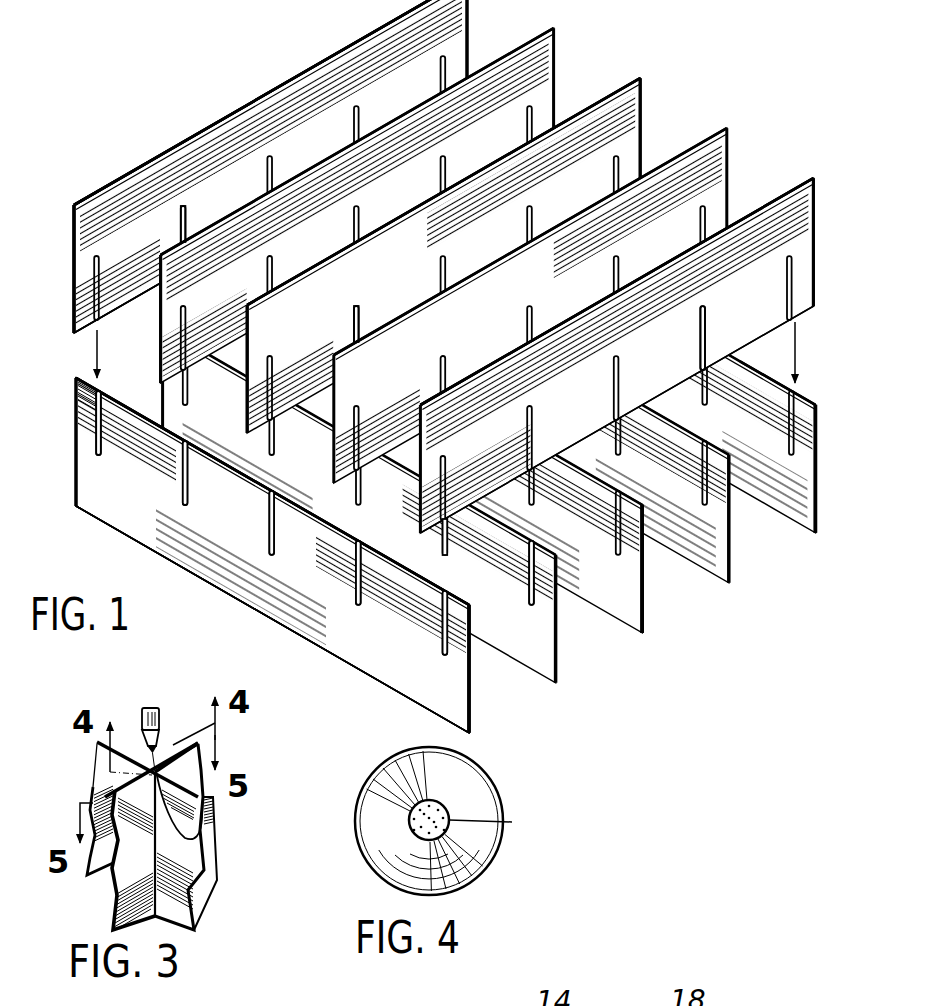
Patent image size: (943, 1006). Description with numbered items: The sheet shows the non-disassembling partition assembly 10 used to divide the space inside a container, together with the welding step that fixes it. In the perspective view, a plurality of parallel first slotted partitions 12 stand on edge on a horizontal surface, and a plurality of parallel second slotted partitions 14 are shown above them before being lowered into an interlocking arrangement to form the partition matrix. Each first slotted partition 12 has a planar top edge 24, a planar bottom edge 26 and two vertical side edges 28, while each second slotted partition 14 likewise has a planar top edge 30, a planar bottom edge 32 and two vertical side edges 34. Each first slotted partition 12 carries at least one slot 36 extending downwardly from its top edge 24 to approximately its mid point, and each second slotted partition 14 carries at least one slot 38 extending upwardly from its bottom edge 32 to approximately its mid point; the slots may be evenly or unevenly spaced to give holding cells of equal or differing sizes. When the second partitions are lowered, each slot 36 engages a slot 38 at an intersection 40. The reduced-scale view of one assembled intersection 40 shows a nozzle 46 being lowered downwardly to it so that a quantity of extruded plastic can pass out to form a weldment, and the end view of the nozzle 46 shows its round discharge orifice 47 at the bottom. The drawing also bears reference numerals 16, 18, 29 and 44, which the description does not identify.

In FIG. 1, the partition assembly 10 is at (727, 44).
In FIG. 1, the first slotted partition 12 is at (220, 613).
In FIG. 3, the first slotted partition 12 is at (88, 878).
In FIG. 1, the second slotted partition 14 is at (222, 96).
In FIG. 3, the second slotted partition 14 is at (217, 880).
In FIG. 1, the panel body 16 is at (318, 228).
In FIG. 1, the partition panel 18 is at (322, 164).
In FIG. 1, the planar top edge 24 is at (78, 376).
In FIG. 3, the planar top edge 24 is at (117, 790).
In FIG. 1, the planar bottom edge 26 is at (340, 660).
In FIG. 1, the vertical side edges 28 is at (74, 470).
In FIG. 3, the weld zone 29 is at (124, 767).
In FIG. 1, the planar top edge 30 is at (338, 53).
In FIG. 1, the planar bottom edge 32 is at (128, 305).
In FIG. 1, the vertical side edges 34 is at (74, 246).
In FIG. 1, the slot 36 is at (98, 455).
In FIG. 1, the slot 38 is at (183, 208).
In FIG. 3, the intersection 40 is at (200, 838).
In FIG. 3, the weld line 44 is at (190, 745).
In FIG. 3, the nozzle 46 is at (163, 714).
In FIG. 4, the nozzle 46 is at (494, 781).
In FIG. 4, the round discharge orifice 47 is at (479, 821).